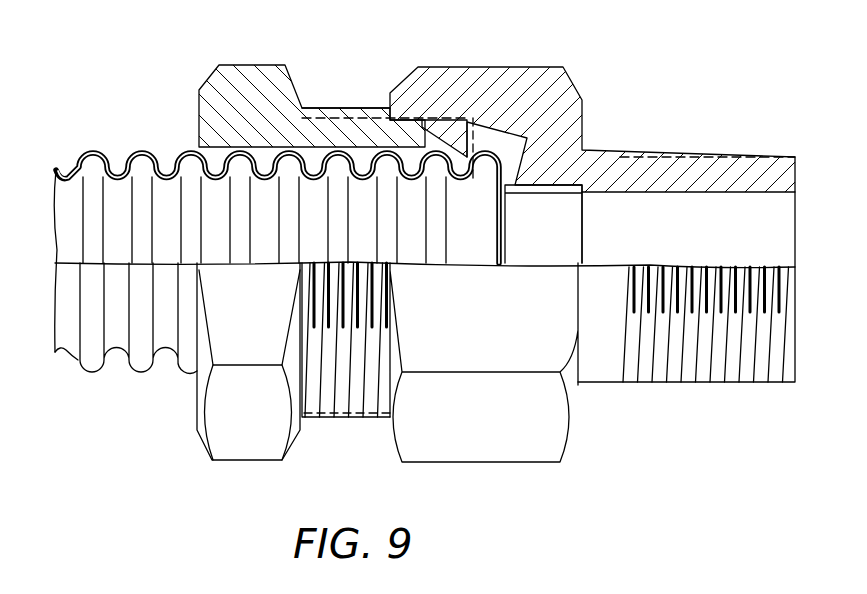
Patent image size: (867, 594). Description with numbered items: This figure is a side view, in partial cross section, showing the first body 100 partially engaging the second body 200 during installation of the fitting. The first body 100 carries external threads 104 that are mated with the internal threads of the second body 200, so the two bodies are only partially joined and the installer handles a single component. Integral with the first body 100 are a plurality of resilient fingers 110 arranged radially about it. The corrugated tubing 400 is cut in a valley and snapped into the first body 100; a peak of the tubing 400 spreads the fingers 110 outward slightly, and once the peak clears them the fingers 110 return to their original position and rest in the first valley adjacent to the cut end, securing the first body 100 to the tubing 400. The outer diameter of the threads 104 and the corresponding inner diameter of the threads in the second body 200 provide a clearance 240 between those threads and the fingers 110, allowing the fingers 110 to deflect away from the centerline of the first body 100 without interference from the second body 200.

The first body 100 is at (234, 64).
The external threads 104 is at (358, 107).
The fingers 110 is at (452, 130).
The second body 200 is at (552, 67).
The clearance 240 is at (423, 117).
The corrugated tubing 400 is at (97, 148).